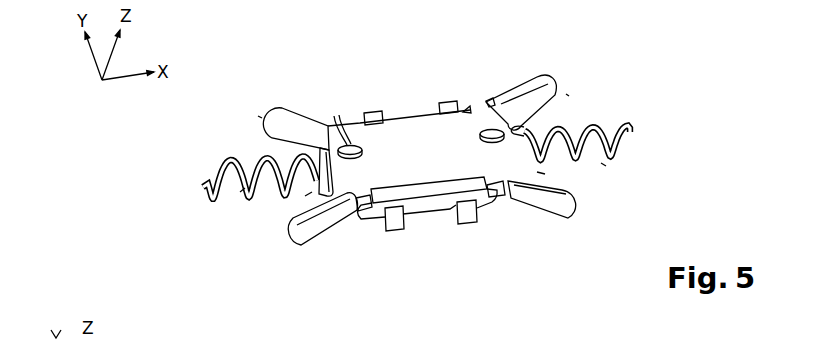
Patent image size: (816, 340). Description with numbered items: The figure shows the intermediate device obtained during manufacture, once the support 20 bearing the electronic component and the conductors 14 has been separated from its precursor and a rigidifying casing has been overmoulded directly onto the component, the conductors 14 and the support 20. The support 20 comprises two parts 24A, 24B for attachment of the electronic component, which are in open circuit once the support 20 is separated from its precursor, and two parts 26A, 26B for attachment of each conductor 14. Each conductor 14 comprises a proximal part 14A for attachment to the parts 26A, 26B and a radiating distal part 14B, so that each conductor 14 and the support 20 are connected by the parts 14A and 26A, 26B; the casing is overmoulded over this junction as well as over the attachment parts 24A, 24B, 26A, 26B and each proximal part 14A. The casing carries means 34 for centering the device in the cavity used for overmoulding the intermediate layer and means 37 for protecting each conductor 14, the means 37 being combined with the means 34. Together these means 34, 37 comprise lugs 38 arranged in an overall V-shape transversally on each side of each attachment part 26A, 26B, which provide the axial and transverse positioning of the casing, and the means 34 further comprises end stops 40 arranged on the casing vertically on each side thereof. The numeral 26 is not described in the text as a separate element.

The conductor 14 is at (206, 187).
The proximal part 14A is at (313, 191).
The radiating distal part 14B is at (245, 188).
The support 20 is at (405, 240).
The part for attachment of the electronic component 24A is at (378, 110).
The part for attachment of the electronic component 24B is at (450, 101).
The frame 26 is at (559, 77).
The part for attachment of the conductor 26A is at (306, 152).
The part for attachment of the conductor 26B is at (556, 115).
The means for centering the device 34 is at (270, 110).
The means for protecting each conductor 37 is at (256, 116).
The lug 38 is at (303, 238).
The end stop 40 is at (336, 118).